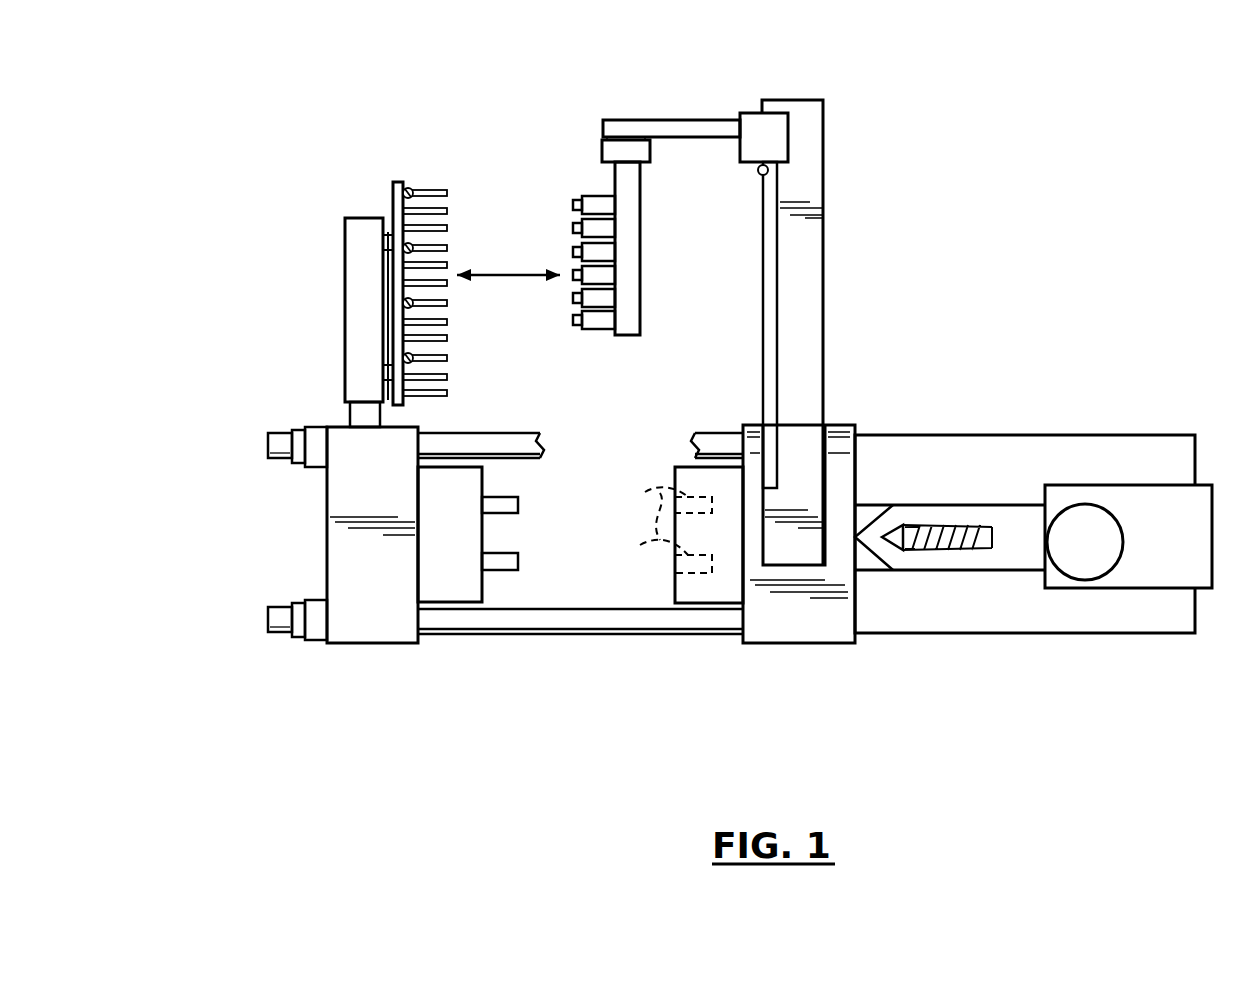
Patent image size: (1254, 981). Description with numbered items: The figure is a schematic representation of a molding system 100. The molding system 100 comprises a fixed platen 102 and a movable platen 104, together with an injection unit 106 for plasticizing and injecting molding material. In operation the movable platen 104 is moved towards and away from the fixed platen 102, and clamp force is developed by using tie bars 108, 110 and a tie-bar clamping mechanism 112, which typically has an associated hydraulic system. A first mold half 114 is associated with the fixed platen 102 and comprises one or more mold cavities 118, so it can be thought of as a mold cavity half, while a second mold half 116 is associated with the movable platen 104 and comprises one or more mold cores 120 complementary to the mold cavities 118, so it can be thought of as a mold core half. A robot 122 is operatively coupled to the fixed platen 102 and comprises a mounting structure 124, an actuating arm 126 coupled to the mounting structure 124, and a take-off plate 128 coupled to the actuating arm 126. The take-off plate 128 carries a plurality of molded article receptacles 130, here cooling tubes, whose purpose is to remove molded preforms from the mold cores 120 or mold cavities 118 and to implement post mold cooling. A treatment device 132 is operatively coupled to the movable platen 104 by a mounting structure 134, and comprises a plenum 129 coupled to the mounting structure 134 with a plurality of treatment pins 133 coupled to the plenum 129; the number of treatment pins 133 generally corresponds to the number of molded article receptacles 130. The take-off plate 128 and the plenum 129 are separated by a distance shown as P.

The molding system 100 is at (1100, 286).
The fixed platen 102 is at (788, 623).
The movable platen 104 is at (360, 628).
The injection unit 106 is at (980, 623).
The tie bar 108 is at (513, 440).
The tie bar 110 is at (610, 620).
The tie-bar clamping mechanism 112 is at (313, 462).
The first mold half 114 is at (730, 587).
The second mold half 116 is at (443, 585).
The mold cavities 118 is at (655, 508).
The mold cores 120 is at (512, 553).
The robot 122 is at (641, 178).
The mounting structure 124 is at (822, 283).
The actuating arm 126 is at (687, 123).
The take-off plate 128 is at (628, 254).
The molded article receptacles 130 is at (593, 197).
The treatment device 132 is at (314, 258).
The treatment pins 133 is at (427, 188).
The mounting structure 134 is at (333, 408).
The plenum 129 is at (357, 282).